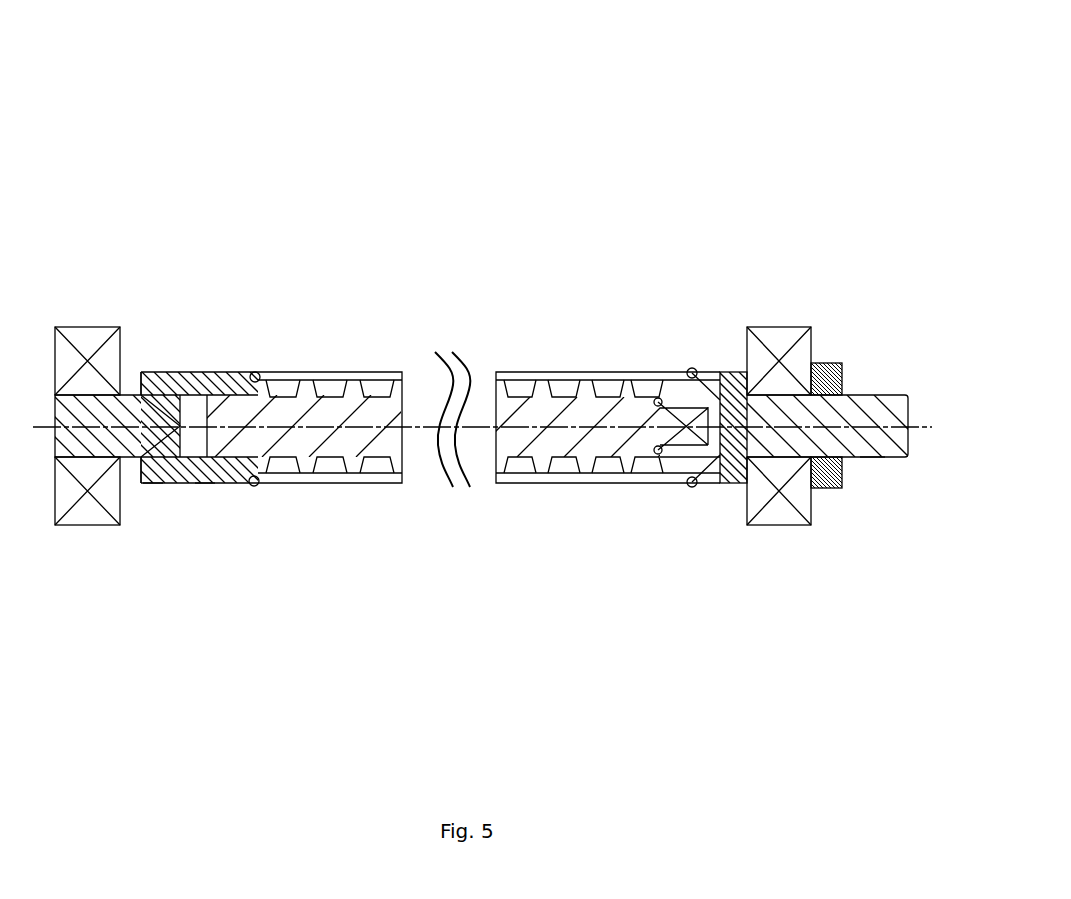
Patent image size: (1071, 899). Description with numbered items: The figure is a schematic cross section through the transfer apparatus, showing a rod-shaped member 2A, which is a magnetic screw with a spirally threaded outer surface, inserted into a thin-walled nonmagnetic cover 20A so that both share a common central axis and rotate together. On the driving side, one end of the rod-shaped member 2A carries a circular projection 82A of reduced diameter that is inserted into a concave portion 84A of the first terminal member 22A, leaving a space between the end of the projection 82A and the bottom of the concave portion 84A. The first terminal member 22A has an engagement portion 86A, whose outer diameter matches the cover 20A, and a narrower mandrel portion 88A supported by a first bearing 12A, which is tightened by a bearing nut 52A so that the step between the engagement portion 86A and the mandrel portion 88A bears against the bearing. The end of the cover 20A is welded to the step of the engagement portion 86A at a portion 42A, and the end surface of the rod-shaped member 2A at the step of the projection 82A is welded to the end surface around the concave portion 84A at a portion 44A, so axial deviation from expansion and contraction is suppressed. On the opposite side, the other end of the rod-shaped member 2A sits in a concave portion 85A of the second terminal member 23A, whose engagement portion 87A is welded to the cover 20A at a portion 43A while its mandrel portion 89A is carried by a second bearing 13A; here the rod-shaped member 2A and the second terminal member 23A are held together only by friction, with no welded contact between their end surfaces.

The rod-shaped member 2A is at (313, 407).
The first bearing 12A is at (778, 518).
The second bearing 13A is at (88, 520).
The cover 20A is at (520, 372).
The first terminal member 22A is at (872, 396).
The second terminal member 23A is at (172, 375).
The welded portion 42A is at (695, 368).
The welded portion 43A is at (257, 372).
The welded portion 44A is at (658, 398).
The bearing nut 52A is at (830, 490).
The projection 82A is at (720, 372).
The concave portion 84A is at (713, 487).
The concave portion 85A is at (153, 473).
The engagement portion 86A is at (688, 486).
The engagement portion 87A is at (205, 473).
The mandrel portion 88A is at (870, 457).
The mandrel portion 89A is at (135, 388).